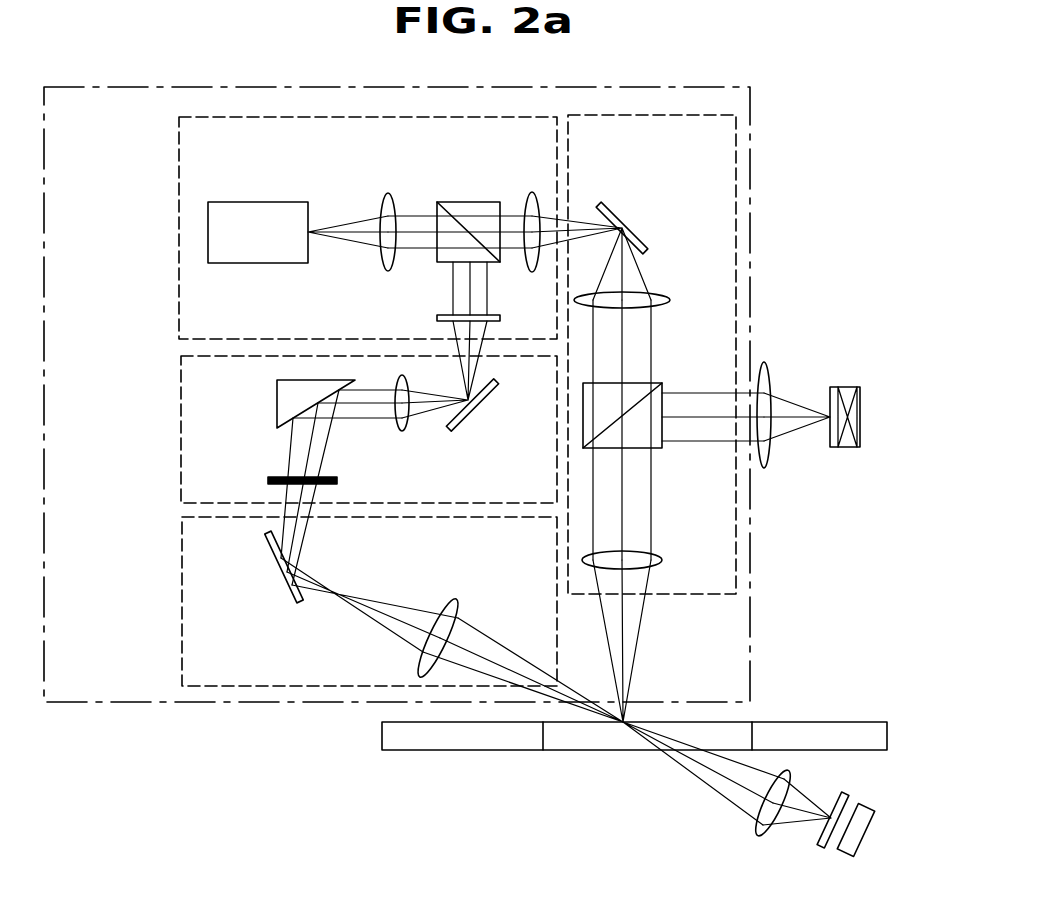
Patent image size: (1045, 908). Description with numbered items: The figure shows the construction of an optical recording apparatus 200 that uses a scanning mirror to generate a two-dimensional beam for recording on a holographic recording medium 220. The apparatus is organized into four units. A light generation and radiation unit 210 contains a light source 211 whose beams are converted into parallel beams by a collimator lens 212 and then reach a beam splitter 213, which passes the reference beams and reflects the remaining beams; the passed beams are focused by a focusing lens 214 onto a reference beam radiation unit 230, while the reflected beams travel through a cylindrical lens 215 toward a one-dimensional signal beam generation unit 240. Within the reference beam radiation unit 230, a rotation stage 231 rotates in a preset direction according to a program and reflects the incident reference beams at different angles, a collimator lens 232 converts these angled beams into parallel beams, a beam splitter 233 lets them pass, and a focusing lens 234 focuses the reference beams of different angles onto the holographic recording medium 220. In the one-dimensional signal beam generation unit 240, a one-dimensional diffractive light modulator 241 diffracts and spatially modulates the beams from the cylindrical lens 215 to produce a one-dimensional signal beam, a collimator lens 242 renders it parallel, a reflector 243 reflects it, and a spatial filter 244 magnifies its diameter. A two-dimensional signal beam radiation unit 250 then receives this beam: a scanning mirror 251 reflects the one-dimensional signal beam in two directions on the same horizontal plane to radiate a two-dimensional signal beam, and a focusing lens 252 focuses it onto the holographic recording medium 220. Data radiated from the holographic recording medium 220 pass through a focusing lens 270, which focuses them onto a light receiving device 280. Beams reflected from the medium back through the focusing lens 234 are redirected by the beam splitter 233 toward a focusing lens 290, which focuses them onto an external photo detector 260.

The optical recording apparatus 200 is at (120, 703).
The light generation and radiation unit 210 is at (178, 245).
The light source 211 is at (258, 210).
The collimator lens 212 is at (390, 194).
The beam splitter 213 is at (455, 205).
The focusing lens 214 is at (531, 200).
The cylindrical lens 215 is at (440, 316).
The holographic recording medium 220 is at (780, 722).
The reference beam radiation unit 230 is at (680, 596).
The rotation stage 231 is at (628, 222).
The collimator lens 232 is at (655, 296).
The beam splitter 233 is at (633, 389).
The focusing lens 234 is at (635, 559).
The one-dimensional signal beam generation unit 240 is at (180, 430).
The one-dimensional diffractive light modulator 241 is at (473, 415).
The collimator lens 242 is at (400, 427).
The reflector 243 is at (287, 403).
The spatial filter 244 is at (276, 478).
The two-dimensional signal beam radiation unit 250 is at (180, 600).
The scanning mirror 251 is at (283, 565).
The focusing lens 252 is at (422, 650).
The photo detector 260 is at (845, 396).
The focusing lens 270 is at (762, 828).
The light receiving device 280 is at (857, 832).
The focusing lens 290 is at (766, 369).